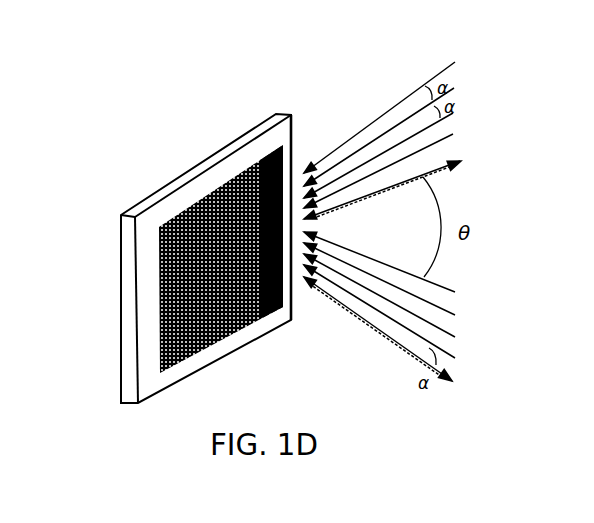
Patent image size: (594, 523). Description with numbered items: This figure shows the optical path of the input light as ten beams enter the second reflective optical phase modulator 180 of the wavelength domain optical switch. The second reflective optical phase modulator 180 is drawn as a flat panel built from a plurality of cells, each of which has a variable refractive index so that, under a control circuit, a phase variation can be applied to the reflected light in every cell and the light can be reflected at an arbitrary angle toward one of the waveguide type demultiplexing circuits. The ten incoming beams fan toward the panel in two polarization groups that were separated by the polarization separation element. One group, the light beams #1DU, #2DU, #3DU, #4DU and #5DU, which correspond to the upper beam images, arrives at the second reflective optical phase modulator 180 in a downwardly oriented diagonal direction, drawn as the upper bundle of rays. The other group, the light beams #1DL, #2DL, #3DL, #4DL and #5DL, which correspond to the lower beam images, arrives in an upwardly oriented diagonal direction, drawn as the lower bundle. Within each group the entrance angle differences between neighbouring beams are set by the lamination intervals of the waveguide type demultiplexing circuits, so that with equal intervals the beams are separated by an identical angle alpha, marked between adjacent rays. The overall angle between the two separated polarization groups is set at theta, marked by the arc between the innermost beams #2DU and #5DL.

The second reflective optical phase modulator 180 is at (226, 160).
The light beam # 5DU is at (412, 109).
The light beam # 4DU is at (412, 129).
The light beam # 1DU is at (412, 148).
The light beam # 3DU is at (412, 166).
The light beam # 2DU is at (412, 185).
The light beam # 5DL is at (410, 268).
The light beam # 4DL is at (410, 285).
The light beam # 1DL is at (410, 303).
The light beam # 3DL is at (410, 321).
The light beam # 2DL is at (410, 339).